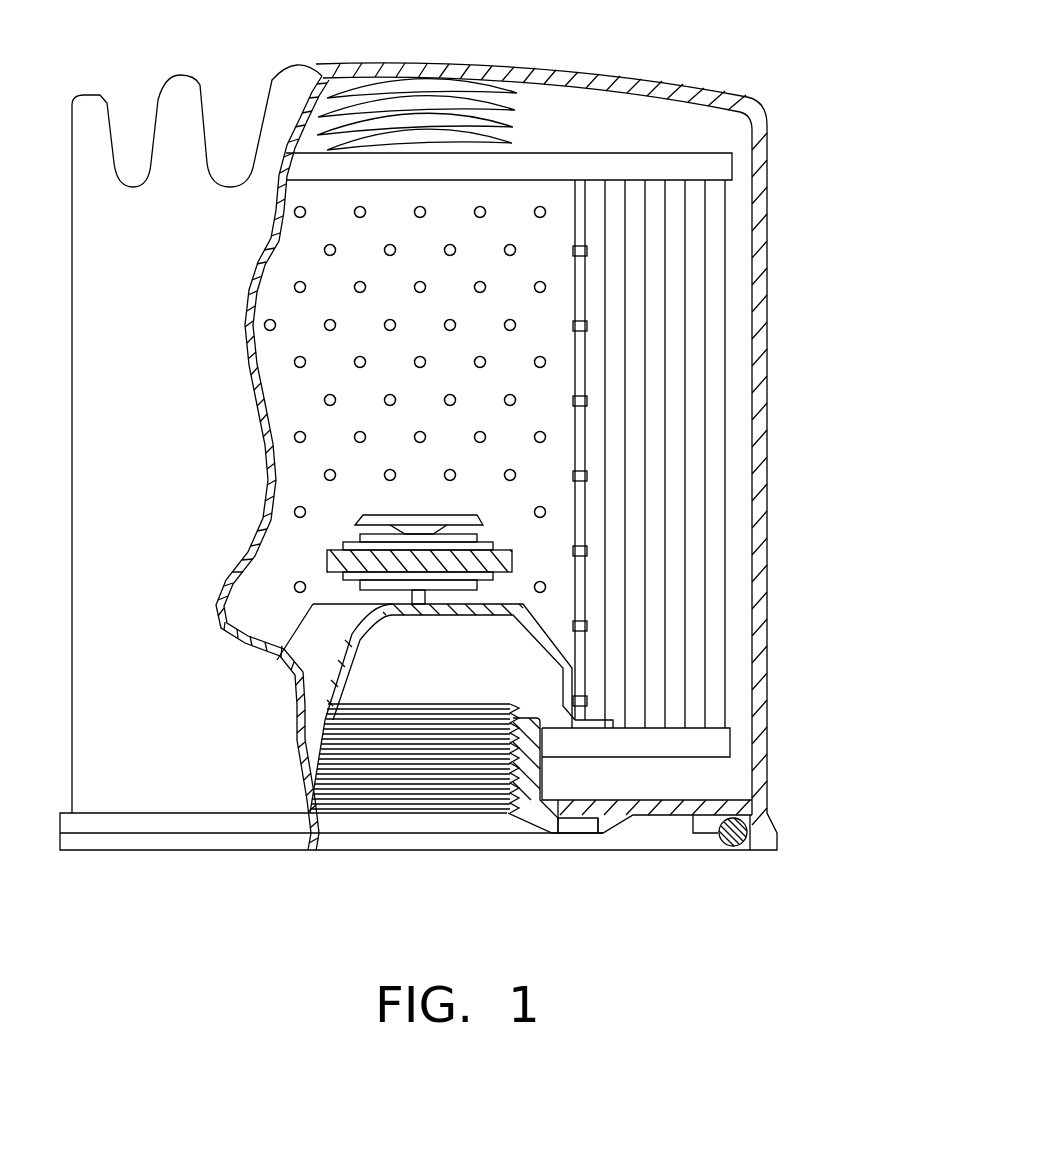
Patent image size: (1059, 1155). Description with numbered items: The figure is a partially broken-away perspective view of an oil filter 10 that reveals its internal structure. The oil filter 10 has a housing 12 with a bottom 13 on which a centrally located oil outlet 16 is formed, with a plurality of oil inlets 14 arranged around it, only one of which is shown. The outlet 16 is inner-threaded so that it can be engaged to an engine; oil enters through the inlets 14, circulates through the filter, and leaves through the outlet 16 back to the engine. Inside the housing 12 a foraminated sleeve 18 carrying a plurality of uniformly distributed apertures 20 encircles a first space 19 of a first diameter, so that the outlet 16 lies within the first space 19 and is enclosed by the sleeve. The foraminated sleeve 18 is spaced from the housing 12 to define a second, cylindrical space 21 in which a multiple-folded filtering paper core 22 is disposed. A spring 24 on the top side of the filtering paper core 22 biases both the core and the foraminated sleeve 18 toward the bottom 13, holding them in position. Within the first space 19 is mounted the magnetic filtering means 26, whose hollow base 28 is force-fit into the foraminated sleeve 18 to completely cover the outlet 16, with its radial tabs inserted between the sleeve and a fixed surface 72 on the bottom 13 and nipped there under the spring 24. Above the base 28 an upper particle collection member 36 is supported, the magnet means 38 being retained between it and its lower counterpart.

The oil filter 10 is at (668, 62).
The housing 12 is at (773, 476).
The bottom 13 is at (647, 815).
The oil inlets 14 is at (584, 828).
The oil outlet 16 is at (472, 793).
The foraminated sleeve 18 is at (584, 619).
The first space 19 is at (550, 325).
The apertures 20 is at (548, 515).
The second cylindrical space 21 is at (735, 198).
The filtering paper core 22 is at (700, 378).
The spring 24 is at (493, 103).
The magnetic filtering means 26 is at (326, 522).
The base 28 is at (560, 625).
The upper particle collection member 36 is at (367, 577).
The magnet means 38 is at (337, 565).
The fixed surface 72 is at (712, 728).